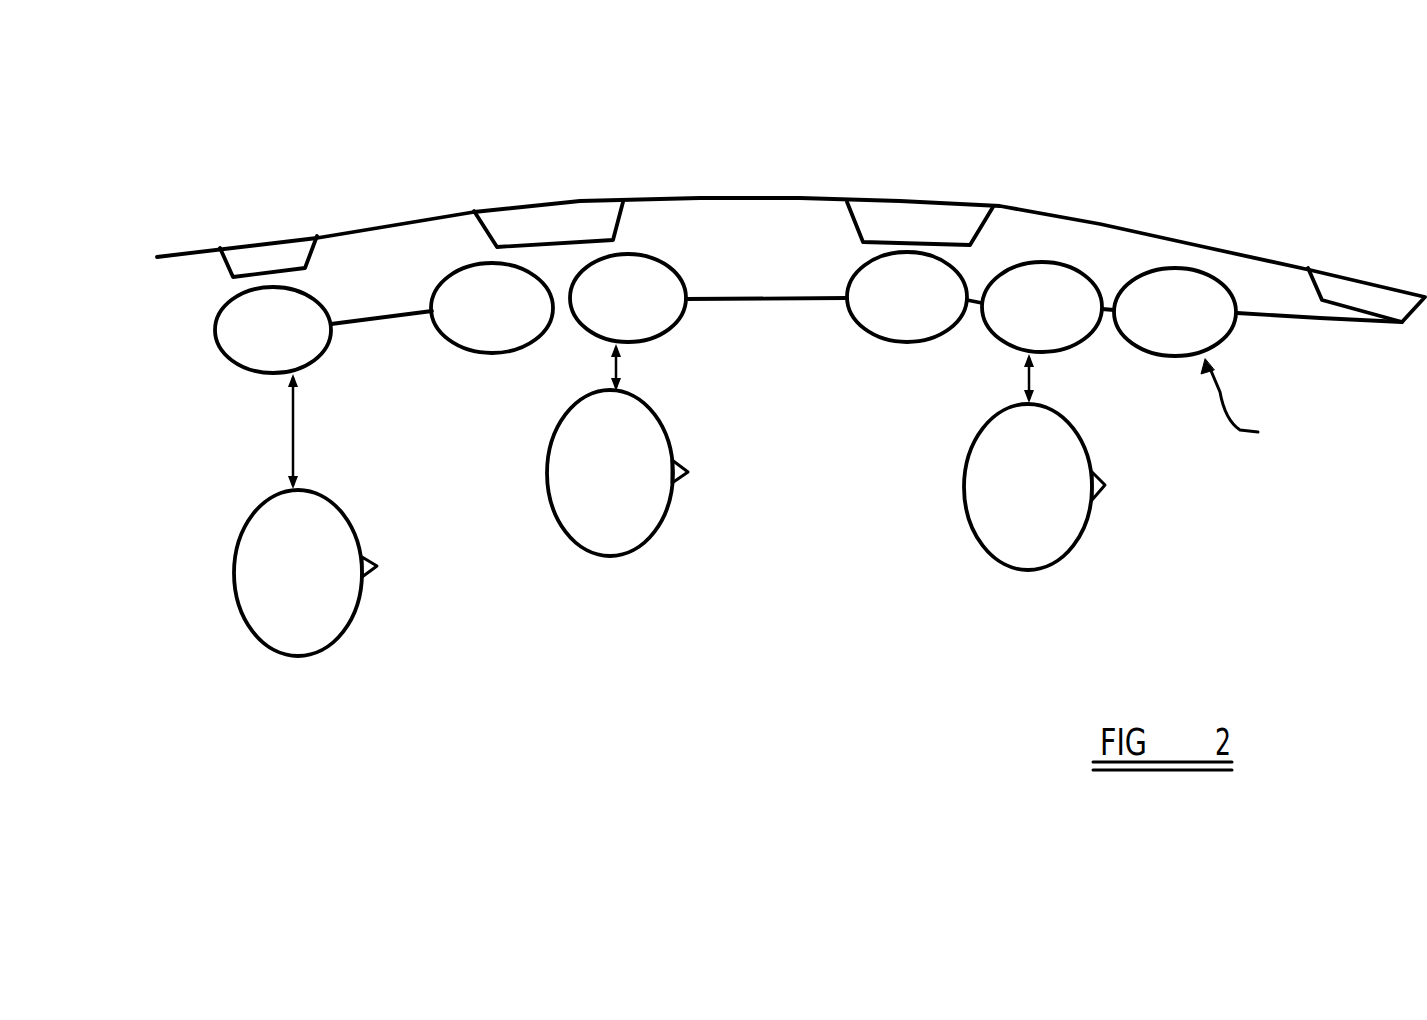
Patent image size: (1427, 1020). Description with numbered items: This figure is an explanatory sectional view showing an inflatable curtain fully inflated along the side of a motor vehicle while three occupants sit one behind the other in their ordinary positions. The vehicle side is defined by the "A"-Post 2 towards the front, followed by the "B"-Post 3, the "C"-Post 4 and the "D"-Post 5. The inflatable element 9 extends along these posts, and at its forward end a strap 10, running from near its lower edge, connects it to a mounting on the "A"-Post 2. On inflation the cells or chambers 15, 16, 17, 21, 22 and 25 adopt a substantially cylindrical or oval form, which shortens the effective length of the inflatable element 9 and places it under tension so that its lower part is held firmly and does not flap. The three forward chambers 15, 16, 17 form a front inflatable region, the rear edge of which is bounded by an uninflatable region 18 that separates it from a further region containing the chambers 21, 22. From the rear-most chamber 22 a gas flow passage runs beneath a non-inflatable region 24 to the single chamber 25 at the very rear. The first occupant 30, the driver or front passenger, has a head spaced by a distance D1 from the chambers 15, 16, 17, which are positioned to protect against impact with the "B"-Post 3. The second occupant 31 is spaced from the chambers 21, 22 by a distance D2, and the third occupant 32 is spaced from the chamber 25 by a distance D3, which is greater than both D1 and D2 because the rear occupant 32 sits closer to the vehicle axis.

The "A"-Post 2 is at (1365, 288).
The "B"-Post 3 is at (968, 228).
The "C"-Post 4 is at (592, 202).
The "D"-Post 5 is at (288, 252).
The inflatable element 9 is at (1243, 403).
The strap 10 is at (1285, 320).
The inflatable chamber 15 is at (1178, 293).
The inflatable chamber 16 is at (1045, 302).
The inflatable chamber 17 is at (907, 293).
The uninflatable region 18 is at (790, 298).
The inflatable chamber 21 is at (642, 288).
The inflatable chamber 22 is at (483, 297).
The non-inflatable region 24 is at (403, 313).
The inflatable chamber 25 is at (223, 342).
The first occupant 30 is at (1048, 537).
The second occupant 31 is at (620, 528).
The third occupant 32 is at (340, 613).
The distance D1 is at (1029, 378).
The distance D2 is at (616, 368).
The distance D3 is at (293, 438).